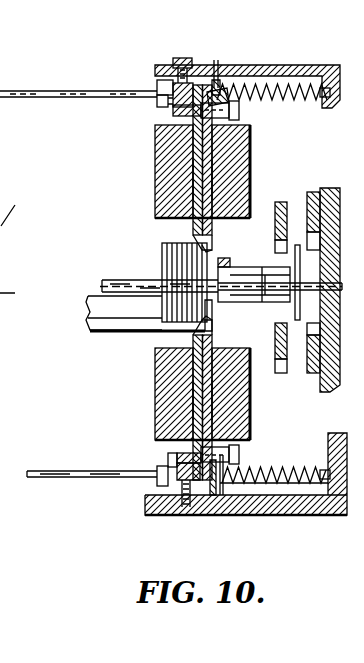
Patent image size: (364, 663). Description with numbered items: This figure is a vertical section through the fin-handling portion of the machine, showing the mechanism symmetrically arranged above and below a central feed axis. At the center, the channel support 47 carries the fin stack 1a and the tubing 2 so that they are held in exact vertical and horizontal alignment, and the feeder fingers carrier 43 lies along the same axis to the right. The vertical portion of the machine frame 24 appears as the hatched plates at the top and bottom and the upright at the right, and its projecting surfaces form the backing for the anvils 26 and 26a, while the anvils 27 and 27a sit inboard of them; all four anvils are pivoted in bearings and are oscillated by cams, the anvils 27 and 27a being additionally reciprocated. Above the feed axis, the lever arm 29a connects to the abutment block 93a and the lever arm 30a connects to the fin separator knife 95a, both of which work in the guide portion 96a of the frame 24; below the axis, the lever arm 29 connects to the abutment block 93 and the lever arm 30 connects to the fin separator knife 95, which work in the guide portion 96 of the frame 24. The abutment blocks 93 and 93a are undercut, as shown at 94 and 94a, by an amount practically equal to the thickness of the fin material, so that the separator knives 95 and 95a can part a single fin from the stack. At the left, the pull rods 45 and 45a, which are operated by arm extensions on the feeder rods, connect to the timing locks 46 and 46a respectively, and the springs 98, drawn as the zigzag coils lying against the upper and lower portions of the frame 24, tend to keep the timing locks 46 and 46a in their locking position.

The fin stack 1a is at (162, 268).
The tubing 2 is at (108, 282).
The machine frame 24 is at (235, 65).
The anvil 26 is at (313, 373).
The anvil 26a is at (312, 192).
The anvil 27 is at (283, 373).
The anvil 27a is at (281, 202).
The lever arm 29 is at (239, 454).
The lever arm 29a is at (239, 112).
The lever arm 30 is at (168, 458).
The lever arm 30a is at (168, 106).
The feeder fingers carrier 43 is at (248, 302).
The pull rod 45 is at (34, 91).
The pull rod 45a is at (42, 480).
The timing lock 46 is at (162, 80).
The timing lock 46a is at (160, 483).
The channel support 47 is at (88, 314).
The abutment block 93 is at (212, 410).
The abutment block 93a is at (212, 166).
The undercut 94 is at (210, 329).
The upper spindle tip 94a is at (212, 249).
The fin separator knife 95 is at (198, 338).
The fin separator knife 95a is at (197, 240).
The guide portion 96 is at (162, 392).
The guide portion 96a is at (157, 170).
The spring 98 is at (292, 82).